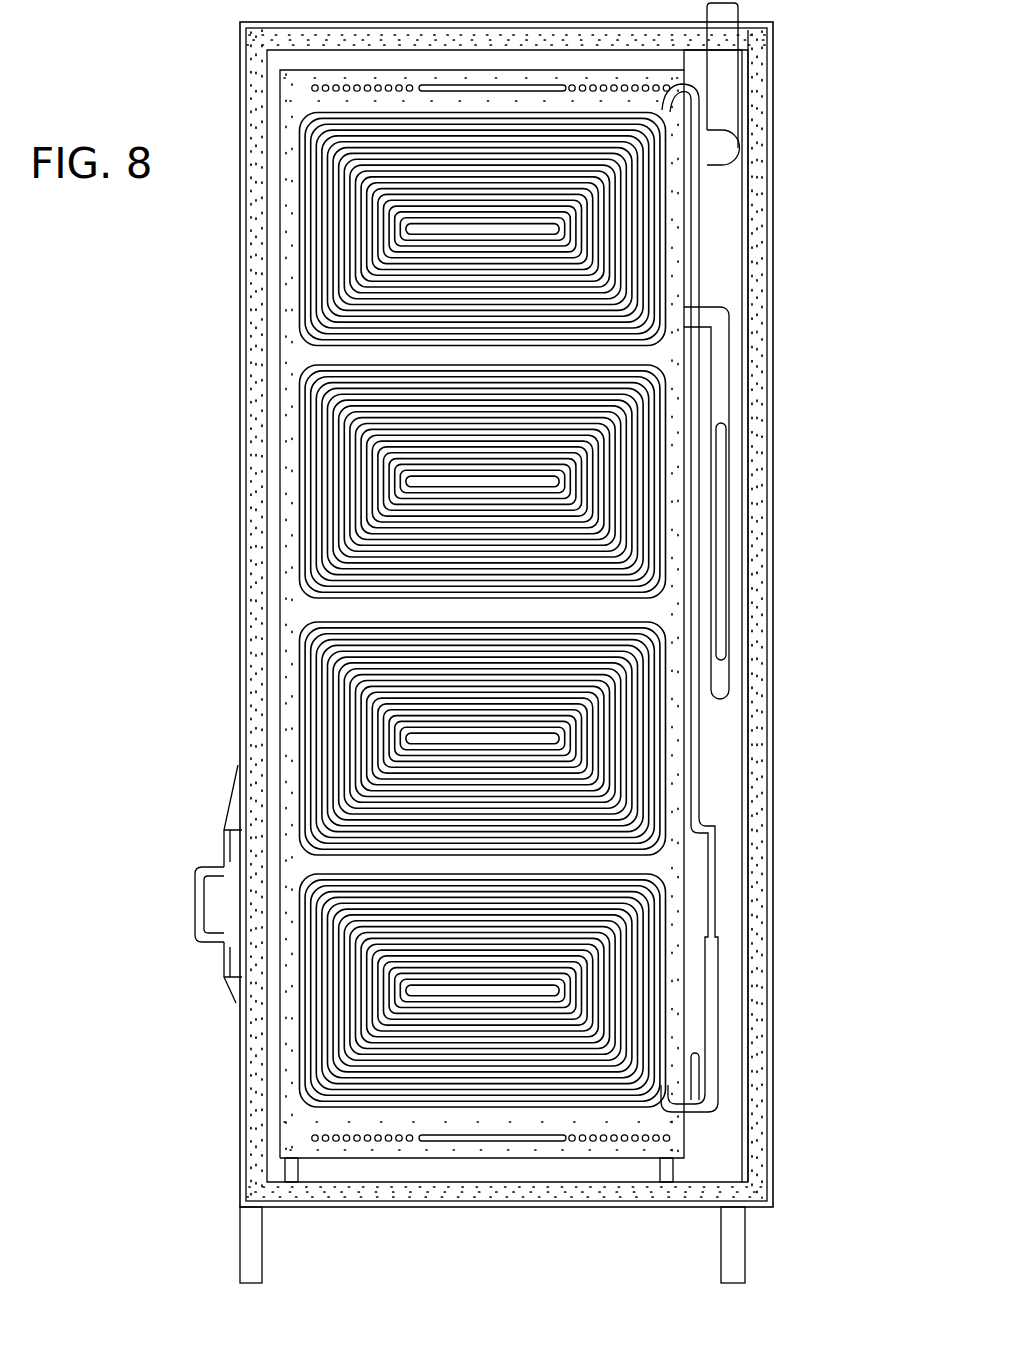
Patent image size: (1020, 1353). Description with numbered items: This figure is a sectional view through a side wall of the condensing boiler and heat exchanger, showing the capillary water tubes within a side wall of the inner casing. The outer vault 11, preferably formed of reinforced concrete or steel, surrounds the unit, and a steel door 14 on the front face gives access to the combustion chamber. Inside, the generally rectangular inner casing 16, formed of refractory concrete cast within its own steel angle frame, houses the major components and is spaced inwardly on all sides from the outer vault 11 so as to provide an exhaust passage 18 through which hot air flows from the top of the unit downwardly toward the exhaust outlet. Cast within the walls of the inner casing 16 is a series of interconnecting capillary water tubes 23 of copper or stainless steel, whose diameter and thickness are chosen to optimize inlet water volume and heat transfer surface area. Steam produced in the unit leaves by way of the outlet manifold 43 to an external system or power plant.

The outer vault 11 is at (762, 943).
The steel door 14 is at (241, 988).
The inner casing 16 is at (291, 246).
The exhaust passage 18 is at (272, 636).
The capillary water tubes 23 is at (316, 450).
The outlet manifold 43 is at (736, 15).